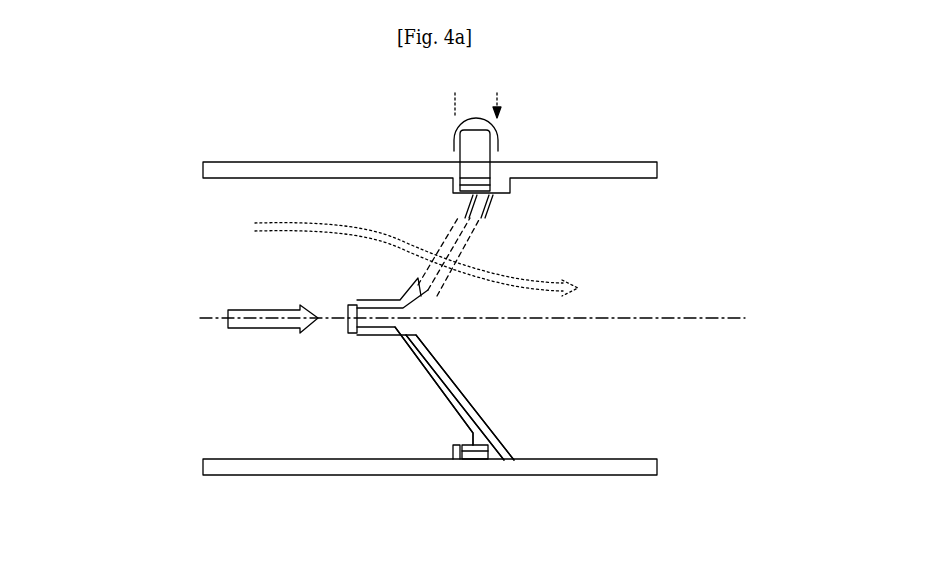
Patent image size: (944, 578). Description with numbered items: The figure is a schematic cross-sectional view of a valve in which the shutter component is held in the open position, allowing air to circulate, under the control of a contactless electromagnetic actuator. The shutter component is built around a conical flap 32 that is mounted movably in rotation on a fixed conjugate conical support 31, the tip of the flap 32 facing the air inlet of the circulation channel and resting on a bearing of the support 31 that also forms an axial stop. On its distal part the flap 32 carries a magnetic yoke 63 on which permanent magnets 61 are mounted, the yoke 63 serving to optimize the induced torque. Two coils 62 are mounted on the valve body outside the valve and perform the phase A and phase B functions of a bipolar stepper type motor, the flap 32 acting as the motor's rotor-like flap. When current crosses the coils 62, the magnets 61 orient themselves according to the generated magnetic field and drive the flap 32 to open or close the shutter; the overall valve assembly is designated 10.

The link mechanism device 10 is at (174, 137).
The fixed conjugate conical support 31 is at (473, 395).
The conical flap 32 is at (433, 380).
The permanent magnets 61 is at (480, 198).
The coils 62 is at (495, 140).
The magnetic yoke 63 is at (482, 194).